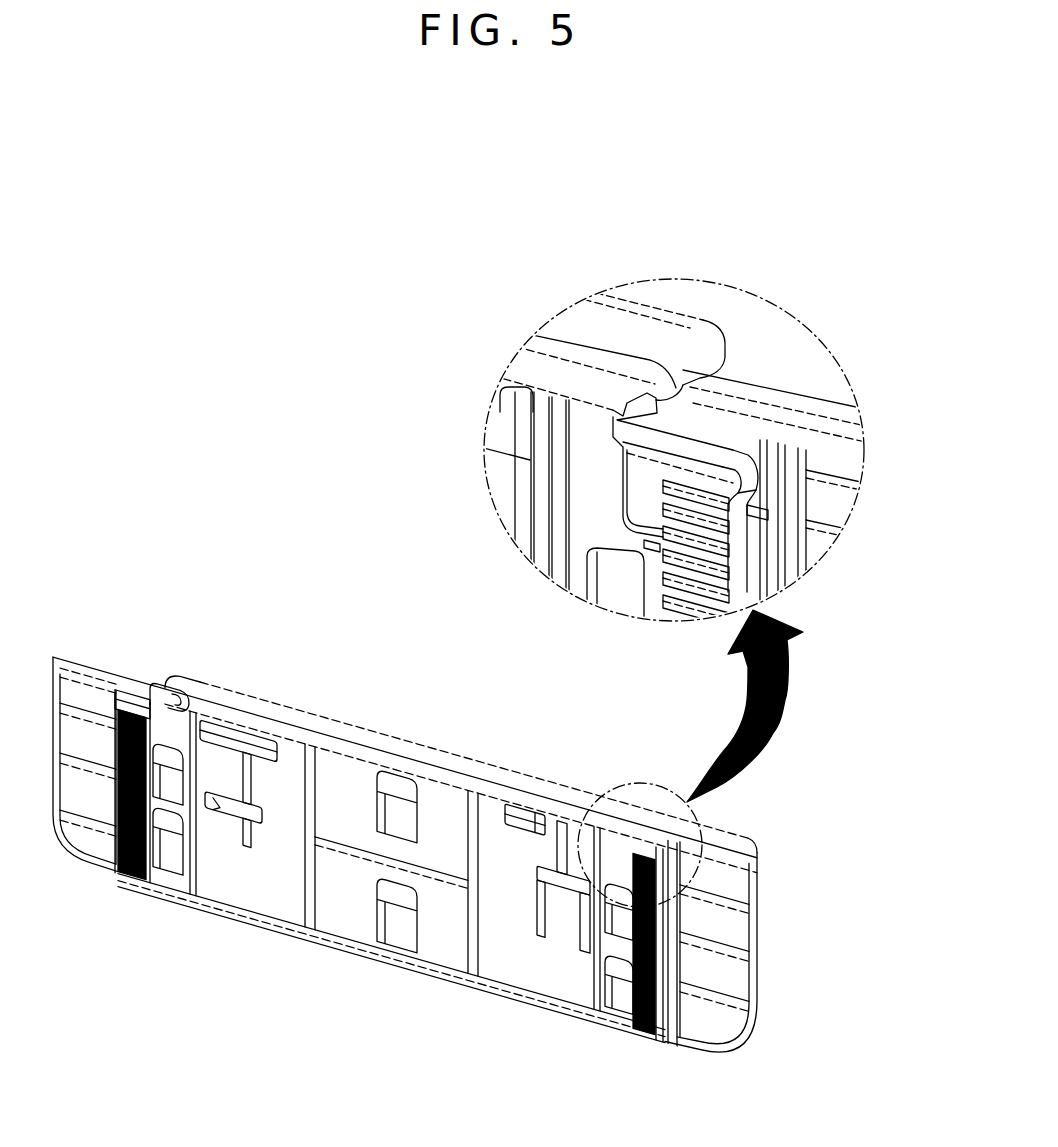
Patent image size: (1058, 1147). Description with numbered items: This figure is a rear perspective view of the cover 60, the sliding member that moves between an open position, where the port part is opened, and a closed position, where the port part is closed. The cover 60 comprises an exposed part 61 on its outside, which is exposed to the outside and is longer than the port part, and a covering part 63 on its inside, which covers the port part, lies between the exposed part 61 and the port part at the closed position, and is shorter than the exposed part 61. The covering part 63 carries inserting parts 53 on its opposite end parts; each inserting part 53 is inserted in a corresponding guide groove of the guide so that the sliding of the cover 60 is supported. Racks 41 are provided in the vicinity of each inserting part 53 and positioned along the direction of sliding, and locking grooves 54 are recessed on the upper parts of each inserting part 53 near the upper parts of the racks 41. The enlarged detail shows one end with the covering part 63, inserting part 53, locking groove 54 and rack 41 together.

The cover 60 is at (292, 692).
The exposed part 61 is at (84, 659).
The covering part 63 is at (154, 680).
The inserting part 53 is at (122, 688).
The locking groove 54 is at (768, 514).
The rack 41 is at (134, 880).